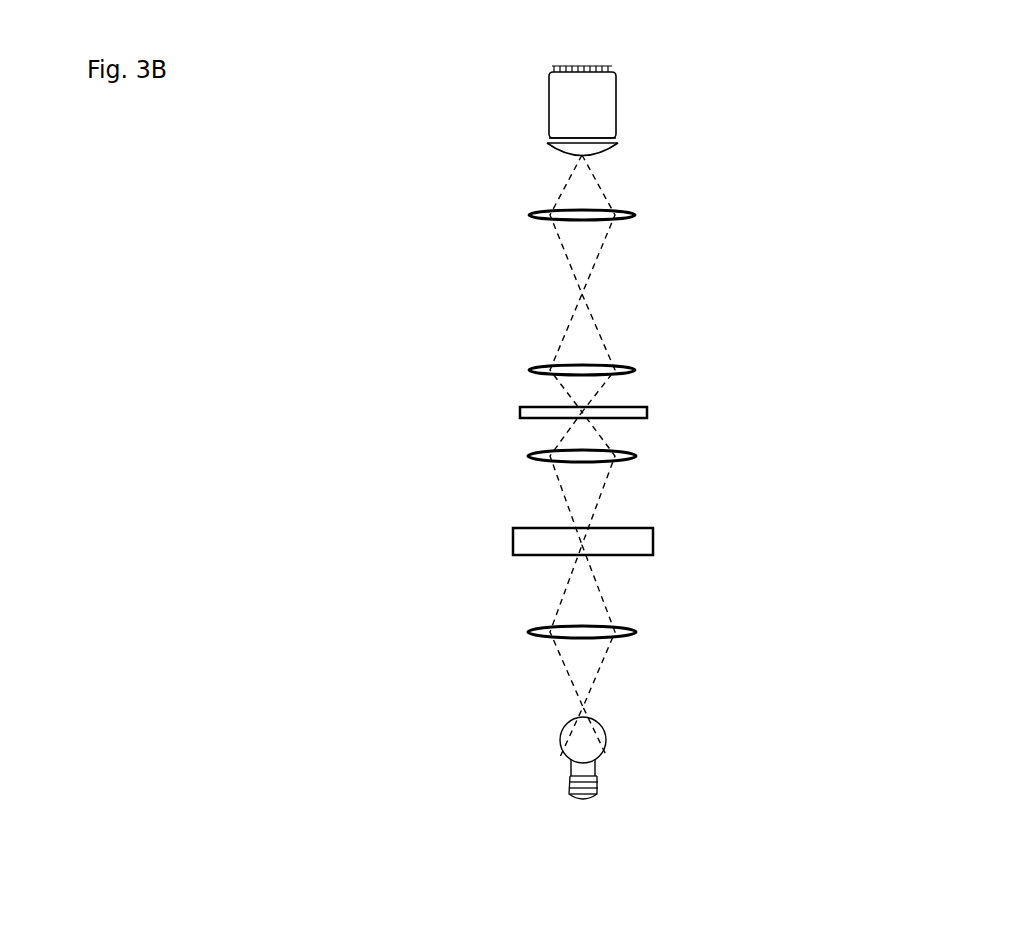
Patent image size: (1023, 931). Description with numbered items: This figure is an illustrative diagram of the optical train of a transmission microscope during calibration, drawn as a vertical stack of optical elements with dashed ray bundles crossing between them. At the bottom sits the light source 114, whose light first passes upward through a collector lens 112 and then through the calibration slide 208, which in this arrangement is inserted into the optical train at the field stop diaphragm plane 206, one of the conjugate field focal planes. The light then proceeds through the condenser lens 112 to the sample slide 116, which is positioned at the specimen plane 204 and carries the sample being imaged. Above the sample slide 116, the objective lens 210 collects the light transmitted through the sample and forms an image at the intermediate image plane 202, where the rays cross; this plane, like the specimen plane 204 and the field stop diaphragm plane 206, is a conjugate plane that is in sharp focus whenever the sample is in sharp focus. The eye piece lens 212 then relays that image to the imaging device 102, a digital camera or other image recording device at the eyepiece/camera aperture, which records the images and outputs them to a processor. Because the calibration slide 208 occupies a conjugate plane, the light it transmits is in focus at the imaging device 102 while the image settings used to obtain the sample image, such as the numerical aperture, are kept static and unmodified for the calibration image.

The imaging device 102 is at (624, 106).
The eye piece lens 212 is at (648, 215).
The intermediate image plane 202 is at (577, 294).
The objective lens 210 is at (647, 364).
The specimen plane 204 is at (519, 413).
The sample slide 116 is at (661, 413).
The condenser lens 112 is at (647, 463).
The field stop diaphragm plane 206 is at (258, 529).
The calibration slide 208 is at (654, 542).
The light source 114 is at (710, 758).